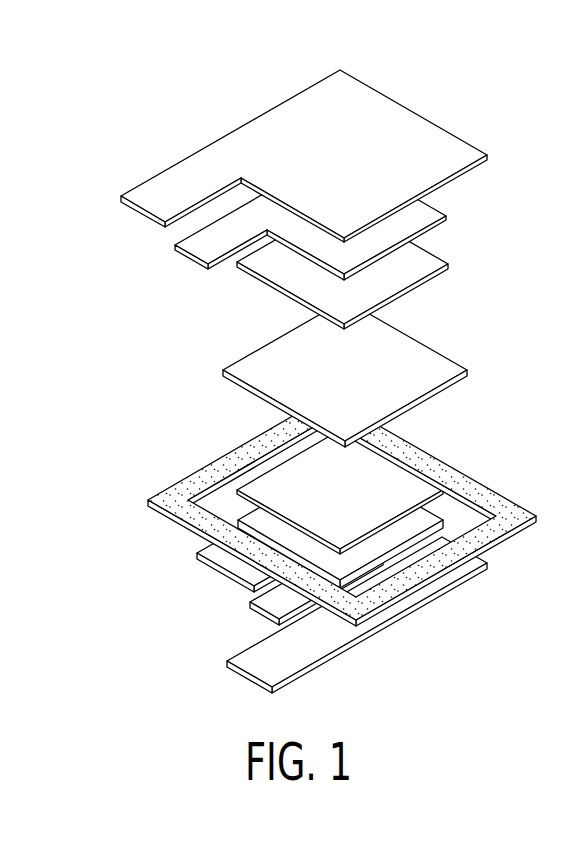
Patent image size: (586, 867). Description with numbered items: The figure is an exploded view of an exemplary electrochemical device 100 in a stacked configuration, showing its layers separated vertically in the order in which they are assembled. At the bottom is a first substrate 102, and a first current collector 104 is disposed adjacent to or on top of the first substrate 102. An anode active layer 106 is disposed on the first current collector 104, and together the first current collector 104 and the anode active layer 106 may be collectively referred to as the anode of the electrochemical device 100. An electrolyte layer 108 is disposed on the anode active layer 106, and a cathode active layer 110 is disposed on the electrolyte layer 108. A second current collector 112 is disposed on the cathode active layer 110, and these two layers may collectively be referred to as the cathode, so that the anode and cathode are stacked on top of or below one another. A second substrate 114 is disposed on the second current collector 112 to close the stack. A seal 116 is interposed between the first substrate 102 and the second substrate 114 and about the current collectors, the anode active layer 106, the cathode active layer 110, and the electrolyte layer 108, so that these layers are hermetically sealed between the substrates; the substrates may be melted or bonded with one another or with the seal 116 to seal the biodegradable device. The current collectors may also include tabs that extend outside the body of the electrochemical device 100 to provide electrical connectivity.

The electrochemical device 100 is at (107, 82).
The first substrate 102 is at (467, 577).
The first current collector 104 is at (418, 520).
The anode active layer 106 is at (418, 488).
The electrolyte layer 108 is at (408, 350).
The cathode active layer 110 is at (423, 264).
The second current collector 112 is at (430, 214).
The second substrate 114 is at (417, 134).
The seal 116 is at (510, 533).